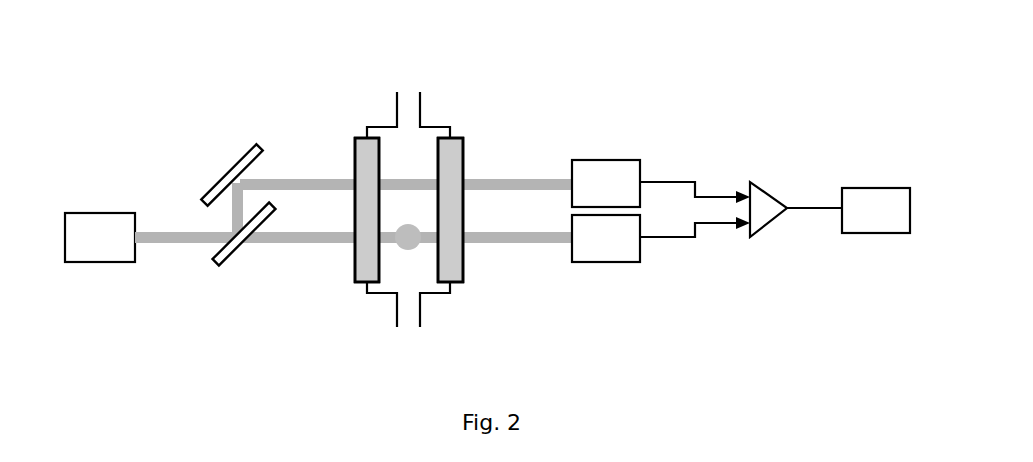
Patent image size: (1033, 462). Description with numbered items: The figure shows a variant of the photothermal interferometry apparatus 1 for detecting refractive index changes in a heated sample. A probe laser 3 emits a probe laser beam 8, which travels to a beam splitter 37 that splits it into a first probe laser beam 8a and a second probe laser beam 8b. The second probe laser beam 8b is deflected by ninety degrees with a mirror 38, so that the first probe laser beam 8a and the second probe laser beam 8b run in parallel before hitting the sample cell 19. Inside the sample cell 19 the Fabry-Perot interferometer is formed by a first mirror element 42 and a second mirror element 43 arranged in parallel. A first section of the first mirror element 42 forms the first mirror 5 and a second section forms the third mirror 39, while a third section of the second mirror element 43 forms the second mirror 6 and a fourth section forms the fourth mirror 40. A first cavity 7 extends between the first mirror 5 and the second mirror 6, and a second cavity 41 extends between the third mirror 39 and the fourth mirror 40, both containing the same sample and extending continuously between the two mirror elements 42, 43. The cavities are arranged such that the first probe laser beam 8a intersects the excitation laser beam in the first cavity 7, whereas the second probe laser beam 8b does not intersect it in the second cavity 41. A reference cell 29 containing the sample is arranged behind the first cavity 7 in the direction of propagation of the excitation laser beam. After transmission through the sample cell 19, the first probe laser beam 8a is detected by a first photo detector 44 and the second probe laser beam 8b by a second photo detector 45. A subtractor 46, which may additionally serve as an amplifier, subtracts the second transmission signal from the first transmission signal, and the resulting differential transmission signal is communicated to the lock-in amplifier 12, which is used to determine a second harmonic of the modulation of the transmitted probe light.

The photothermal interferometry apparatus 1 is at (82, 67).
The probe laser 3 is at (100, 213).
The probe laser beam 8 is at (182, 243).
The first probe laser beam 8a is at (280, 243).
The second probe laser beam 8b is at (280, 179).
The beam splitter 37 is at (232, 268).
The mirror 38 is at (247, 150).
The third mirror 39 is at (355, 150).
The fourth mirror 40 is at (463, 150).
The second cavity 41 is at (399, 158).
The first mirror element 42 is at (355, 212).
The second mirror element 43 is at (465, 212).
The first mirror 5 is at (355, 267).
The second mirror 6 is at (463, 273).
The sample cell 19 is at (366, 290).
The reference cell 29 is at (408, 248).
The first cavity 7 is at (424, 264).
The first photo detector 44 is at (607, 262).
The second photo detector 45 is at (607, 160).
The subtractor 46 is at (770, 195).
The lock-in amplifier 12 is at (877, 233).